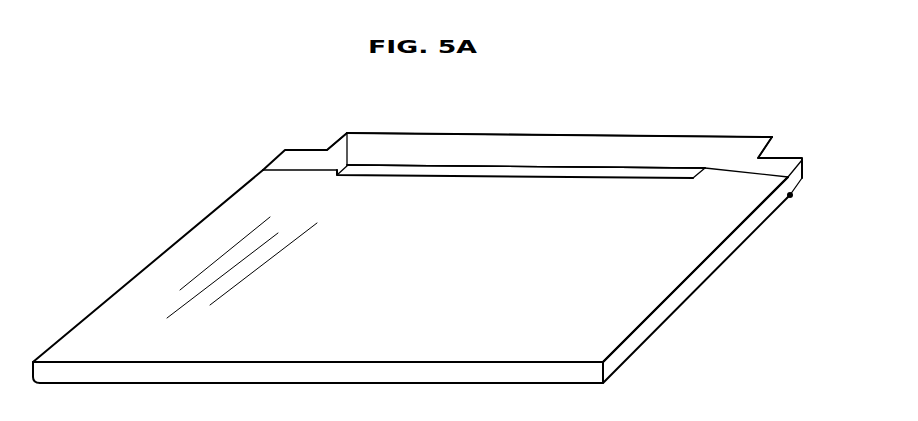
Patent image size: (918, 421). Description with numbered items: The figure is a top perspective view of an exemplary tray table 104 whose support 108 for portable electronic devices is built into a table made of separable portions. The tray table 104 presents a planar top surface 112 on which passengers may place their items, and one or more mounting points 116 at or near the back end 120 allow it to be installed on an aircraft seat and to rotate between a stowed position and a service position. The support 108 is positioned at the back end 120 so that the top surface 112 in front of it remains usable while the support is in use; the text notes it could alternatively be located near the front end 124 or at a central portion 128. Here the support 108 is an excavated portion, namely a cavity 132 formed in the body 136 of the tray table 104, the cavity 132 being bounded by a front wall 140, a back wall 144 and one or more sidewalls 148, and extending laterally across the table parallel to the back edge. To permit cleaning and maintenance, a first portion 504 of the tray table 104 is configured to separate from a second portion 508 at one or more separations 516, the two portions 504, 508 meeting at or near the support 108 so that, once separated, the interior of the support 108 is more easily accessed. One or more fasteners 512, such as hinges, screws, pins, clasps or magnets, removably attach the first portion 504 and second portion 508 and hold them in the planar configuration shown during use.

The tray table 104 is at (707, 322).
The support 108 is at (573, 167).
The top surface 112 is at (669, 236).
The mounting points 116 is at (318, 133).
The back end 120 is at (615, 135).
The front end 124 is at (318, 362).
The central portion 128 is at (443, 253).
The cavity 132 is at (414, 157).
The body 136 is at (583, 339).
The front wall 140 is at (537, 178).
The back wall 144 is at (473, 165).
The sidewalls 148 is at (345, 165).
The first portion 504 is at (677, 136).
The second portion 508 is at (718, 268).
The fasteners 512 is at (790, 197).
The separations 516 is at (283, 168).